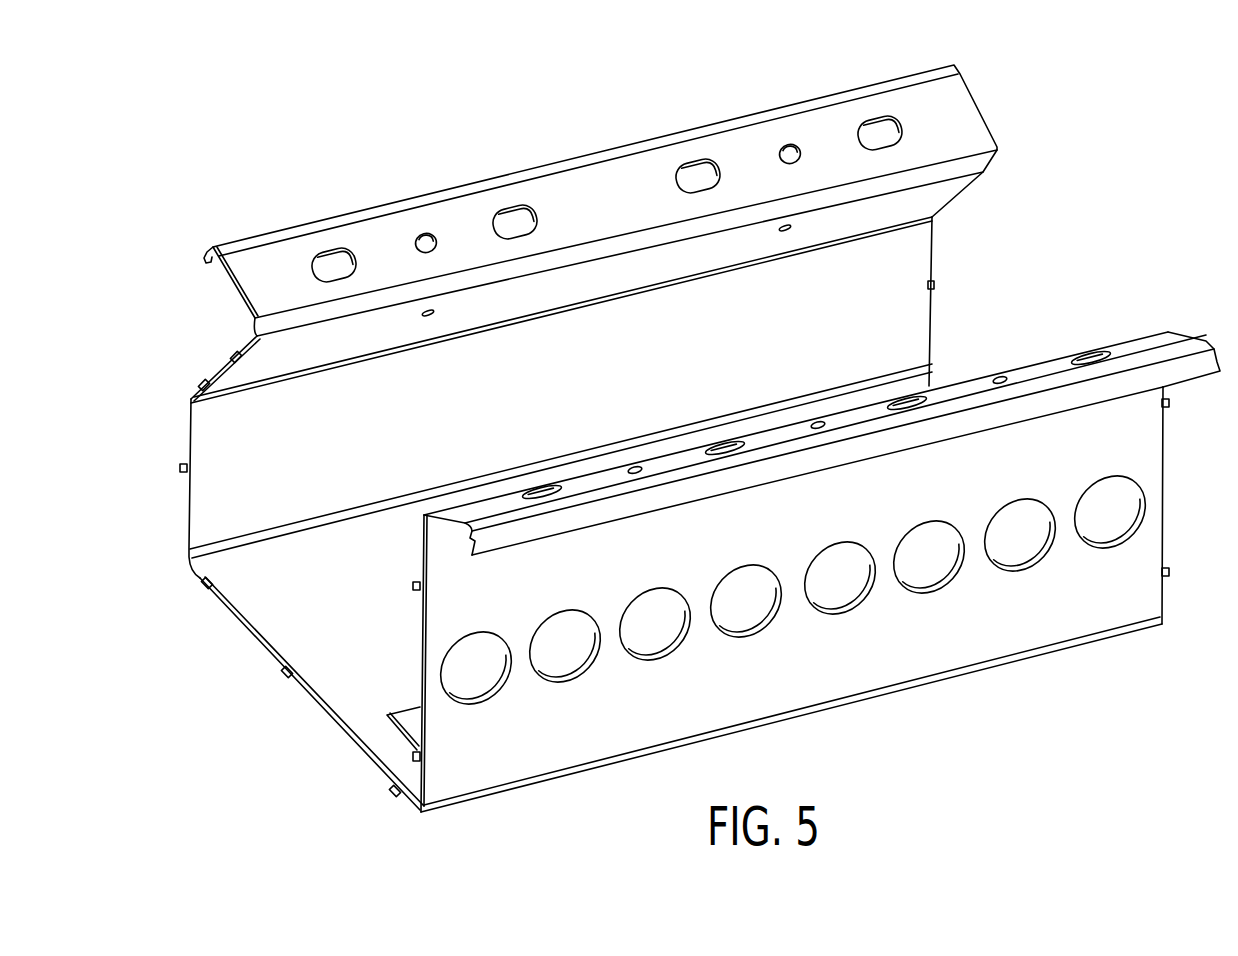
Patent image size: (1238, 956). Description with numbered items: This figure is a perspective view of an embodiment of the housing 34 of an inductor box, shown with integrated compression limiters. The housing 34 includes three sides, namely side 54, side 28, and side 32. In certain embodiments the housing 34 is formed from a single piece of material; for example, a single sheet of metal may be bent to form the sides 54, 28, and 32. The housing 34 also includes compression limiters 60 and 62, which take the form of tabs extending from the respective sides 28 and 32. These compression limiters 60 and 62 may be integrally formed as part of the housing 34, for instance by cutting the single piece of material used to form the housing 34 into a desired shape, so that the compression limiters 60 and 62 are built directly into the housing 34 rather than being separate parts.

The housing 34 is at (170, 211).
The side 54 is at (264, 263).
The side 32 is at (930, 350).
The side 28 is at (247, 632).
The compression limiter 60 is at (184, 469).
The compression limiter 62 is at (932, 288).